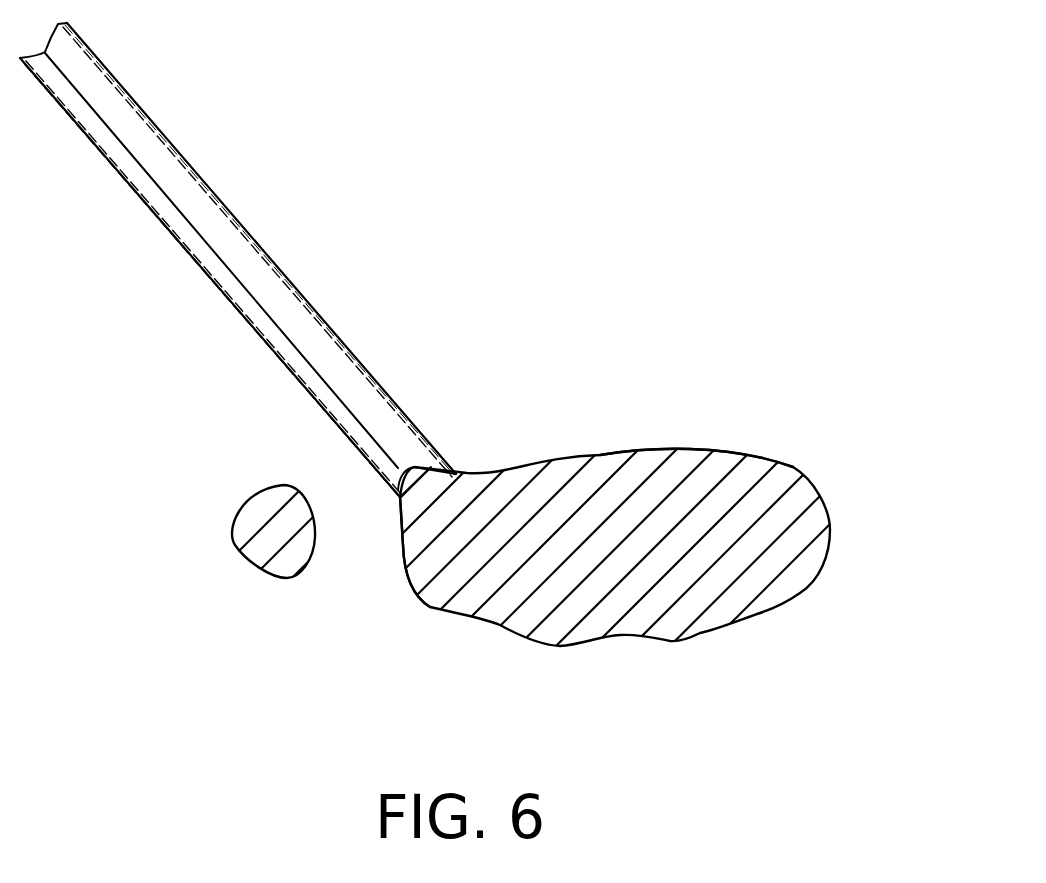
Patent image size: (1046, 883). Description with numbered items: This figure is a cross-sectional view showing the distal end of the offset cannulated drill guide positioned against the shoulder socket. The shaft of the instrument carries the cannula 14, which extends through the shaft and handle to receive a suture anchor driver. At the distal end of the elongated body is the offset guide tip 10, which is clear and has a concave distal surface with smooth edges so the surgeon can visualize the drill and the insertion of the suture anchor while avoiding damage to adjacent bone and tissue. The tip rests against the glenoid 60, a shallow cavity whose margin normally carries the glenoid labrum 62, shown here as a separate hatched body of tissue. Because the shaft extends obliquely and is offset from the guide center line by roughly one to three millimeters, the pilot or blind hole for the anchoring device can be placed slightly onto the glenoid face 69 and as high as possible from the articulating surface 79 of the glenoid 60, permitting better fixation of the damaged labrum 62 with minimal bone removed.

The offset guide tip 10 is at (305, 332).
The cannula 14 is at (430, 466).
The glenoid cavity 60 is at (800, 536).
The glenoid labrum 62 is at (240, 530).
The glenoid face 69 is at (675, 445).
The articulating surface 79 is at (402, 540).